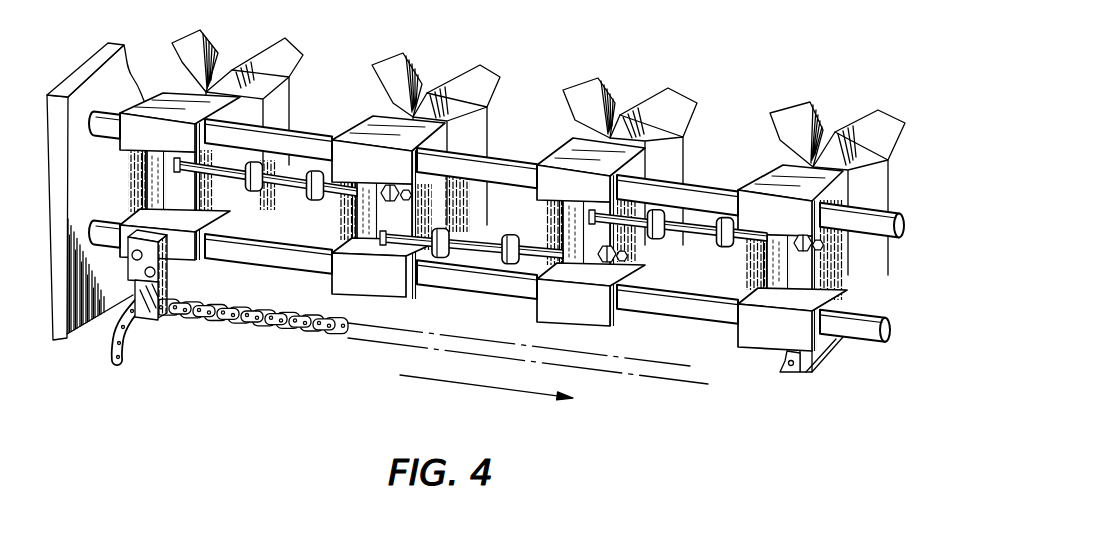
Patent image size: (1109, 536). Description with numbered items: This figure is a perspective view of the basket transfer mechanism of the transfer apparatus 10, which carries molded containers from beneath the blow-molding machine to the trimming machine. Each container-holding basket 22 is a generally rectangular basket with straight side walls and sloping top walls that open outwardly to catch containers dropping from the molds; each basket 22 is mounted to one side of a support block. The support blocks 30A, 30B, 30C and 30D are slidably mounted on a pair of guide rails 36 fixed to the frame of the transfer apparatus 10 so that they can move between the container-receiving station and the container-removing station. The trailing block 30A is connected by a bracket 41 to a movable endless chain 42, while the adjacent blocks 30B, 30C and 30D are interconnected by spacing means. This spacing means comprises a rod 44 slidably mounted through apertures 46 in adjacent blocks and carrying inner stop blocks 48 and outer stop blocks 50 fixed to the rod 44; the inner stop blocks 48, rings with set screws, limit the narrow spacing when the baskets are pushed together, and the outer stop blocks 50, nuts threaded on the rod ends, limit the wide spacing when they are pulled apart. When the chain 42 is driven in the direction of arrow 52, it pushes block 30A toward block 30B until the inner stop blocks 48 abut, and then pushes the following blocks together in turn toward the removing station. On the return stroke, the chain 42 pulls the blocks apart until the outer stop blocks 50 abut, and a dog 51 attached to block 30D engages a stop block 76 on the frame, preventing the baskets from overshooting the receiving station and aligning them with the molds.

The transfer apparatus 10 is at (64, 67).
The basket 22 is at (292, 102).
The trailing block 30A is at (163, 95).
The support block 30B is at (370, 130).
The support block 30C is at (562, 160).
The support block 30D is at (753, 178).
The guide rails 36 is at (273, 138).
The bracket 41 is at (162, 285).
The endless chain 42 is at (294, 333).
The rod 44 is at (230, 178).
The apertures 46 is at (176, 165).
The inner stop blocks 48 is at (314, 200).
The outer stop blocks 50 is at (412, 194).
The dog 51 is at (814, 361).
The arrow 52 is at (528, 375).
The stop block 76 is at (792, 375).